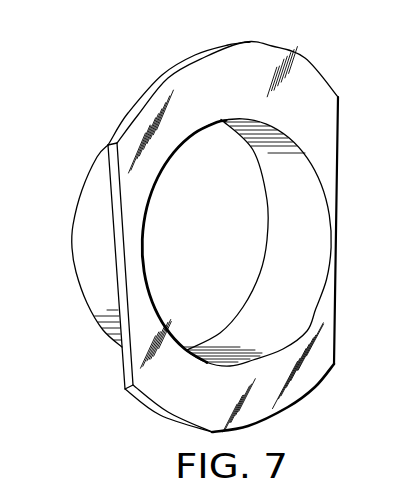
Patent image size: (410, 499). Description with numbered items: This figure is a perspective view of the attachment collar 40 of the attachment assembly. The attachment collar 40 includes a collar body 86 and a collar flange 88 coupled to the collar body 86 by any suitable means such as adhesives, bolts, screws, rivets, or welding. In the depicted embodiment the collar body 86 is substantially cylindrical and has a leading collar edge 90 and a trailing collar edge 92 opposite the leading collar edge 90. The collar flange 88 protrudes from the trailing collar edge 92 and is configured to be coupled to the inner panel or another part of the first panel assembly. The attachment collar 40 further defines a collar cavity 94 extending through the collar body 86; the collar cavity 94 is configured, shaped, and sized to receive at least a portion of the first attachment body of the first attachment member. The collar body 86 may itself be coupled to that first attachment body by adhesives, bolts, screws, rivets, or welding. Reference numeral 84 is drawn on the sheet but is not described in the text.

The attachment collar 40 is at (80, 223).
The rear face 84 is at (61, 336).
The collar body 86 is at (87, 192).
The collar flange 88 is at (256, 72).
The leading collar edge 90 is at (92, 163).
The trailing collar edge 92 is at (323, 182).
The collar cavity 94 is at (292, 250).